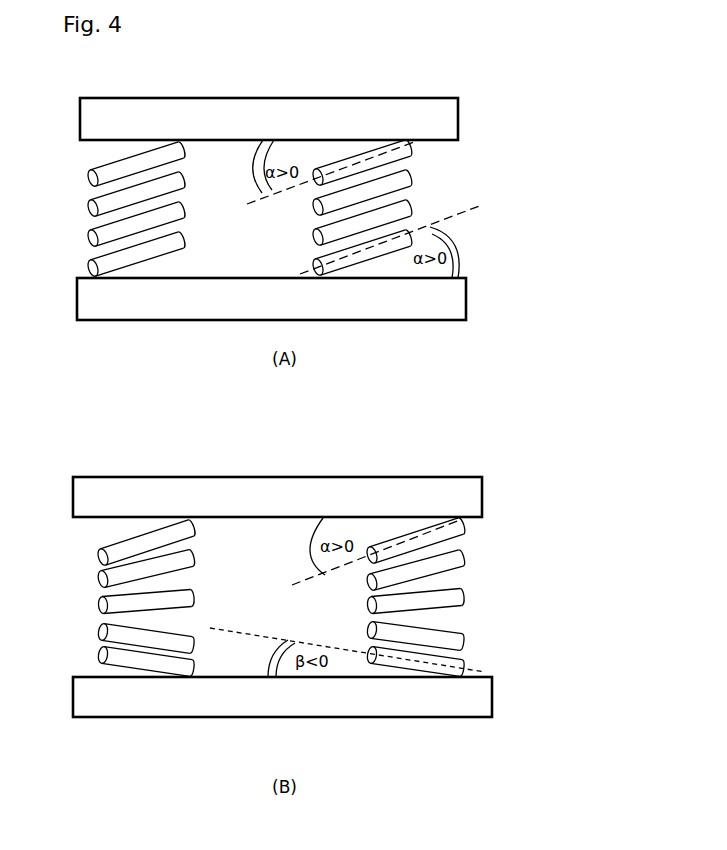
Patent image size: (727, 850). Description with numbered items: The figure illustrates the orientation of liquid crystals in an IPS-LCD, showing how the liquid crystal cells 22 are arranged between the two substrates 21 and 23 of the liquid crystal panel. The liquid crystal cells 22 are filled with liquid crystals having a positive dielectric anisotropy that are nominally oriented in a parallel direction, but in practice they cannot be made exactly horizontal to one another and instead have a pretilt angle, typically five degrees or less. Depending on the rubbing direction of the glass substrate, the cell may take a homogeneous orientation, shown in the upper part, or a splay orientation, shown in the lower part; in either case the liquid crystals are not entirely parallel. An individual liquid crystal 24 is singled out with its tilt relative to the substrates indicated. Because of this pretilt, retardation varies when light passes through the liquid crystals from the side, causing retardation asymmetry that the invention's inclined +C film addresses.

The substrate 21 is at (340, 105).
The liquid crystal cells 22 is at (502, 138).
The substrate 23 is at (423, 293).
The columnar member 24 is at (392, 158).